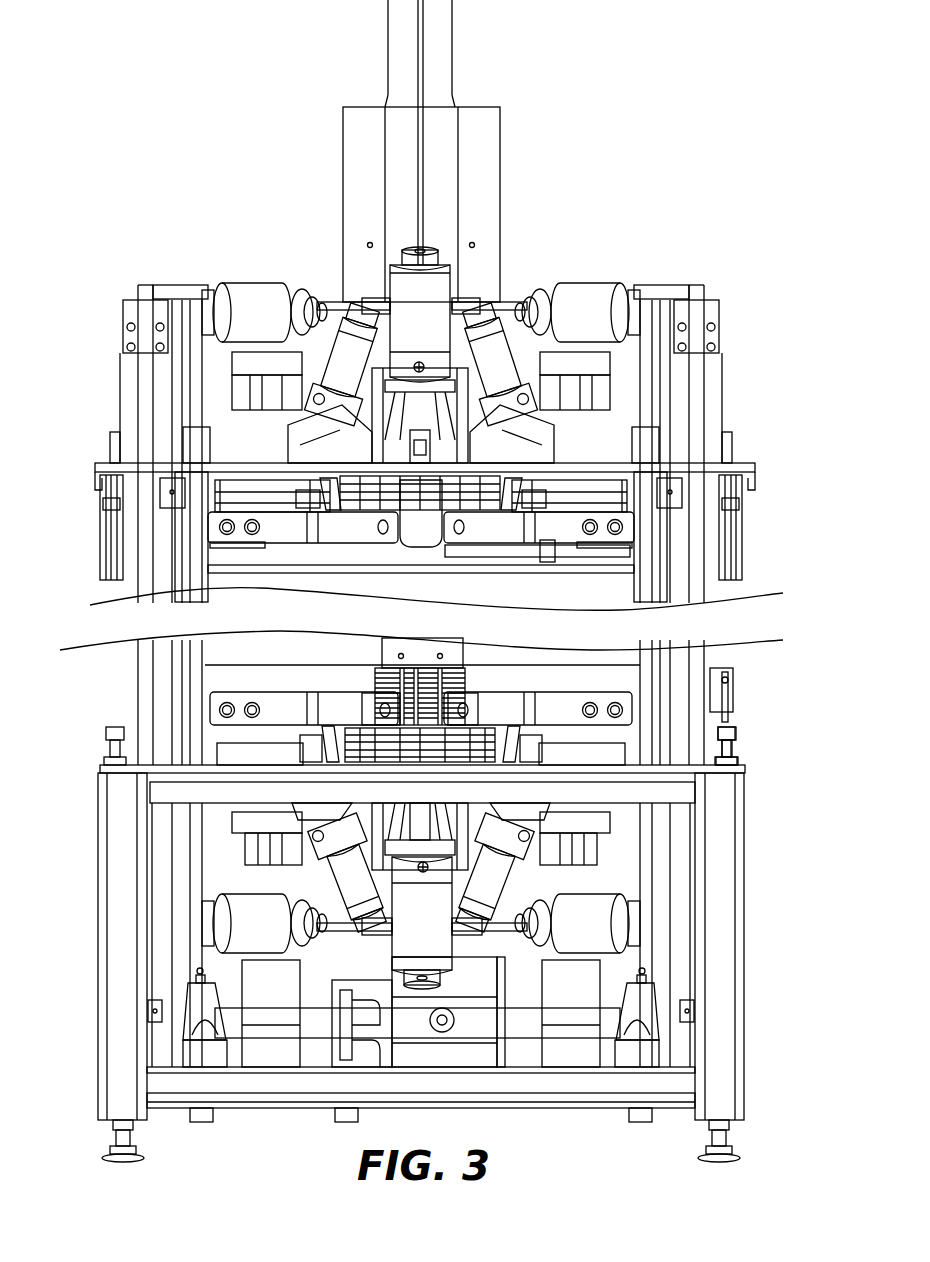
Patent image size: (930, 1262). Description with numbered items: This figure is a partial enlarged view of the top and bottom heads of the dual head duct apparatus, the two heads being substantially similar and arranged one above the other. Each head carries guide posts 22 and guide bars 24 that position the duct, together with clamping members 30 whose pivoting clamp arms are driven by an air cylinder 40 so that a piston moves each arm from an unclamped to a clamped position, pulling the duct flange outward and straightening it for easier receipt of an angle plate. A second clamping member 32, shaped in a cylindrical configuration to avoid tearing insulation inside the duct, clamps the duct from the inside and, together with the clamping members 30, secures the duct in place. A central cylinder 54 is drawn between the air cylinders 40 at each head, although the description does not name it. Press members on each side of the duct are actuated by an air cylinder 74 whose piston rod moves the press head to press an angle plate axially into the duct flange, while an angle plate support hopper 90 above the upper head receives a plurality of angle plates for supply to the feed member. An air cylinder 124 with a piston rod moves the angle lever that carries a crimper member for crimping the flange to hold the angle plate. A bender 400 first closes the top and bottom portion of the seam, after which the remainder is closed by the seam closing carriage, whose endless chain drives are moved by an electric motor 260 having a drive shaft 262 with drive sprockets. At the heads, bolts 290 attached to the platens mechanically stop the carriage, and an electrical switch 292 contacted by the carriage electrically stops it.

The guide posts 22 is at (600, 470).
The guide bars 24 is at (478, 705).
The clamping members 30 is at (328, 490).
The second clamping member 32 is at (435, 538).
The air cylinder 40 is at (348, 343).
The central cylinder 54 is at (433, 333).
The air cylinder 74 is at (262, 385).
The angle plate support hopper 90 is at (358, 155).
The air cylinder 124 is at (248, 297).
The electric motor 260 is at (467, 1023).
The drive shaft 262 is at (545, 1010).
The bolts 290 is at (110, 505).
The electrical switch 292 is at (728, 683).
The benders 400 is at (502, 660).